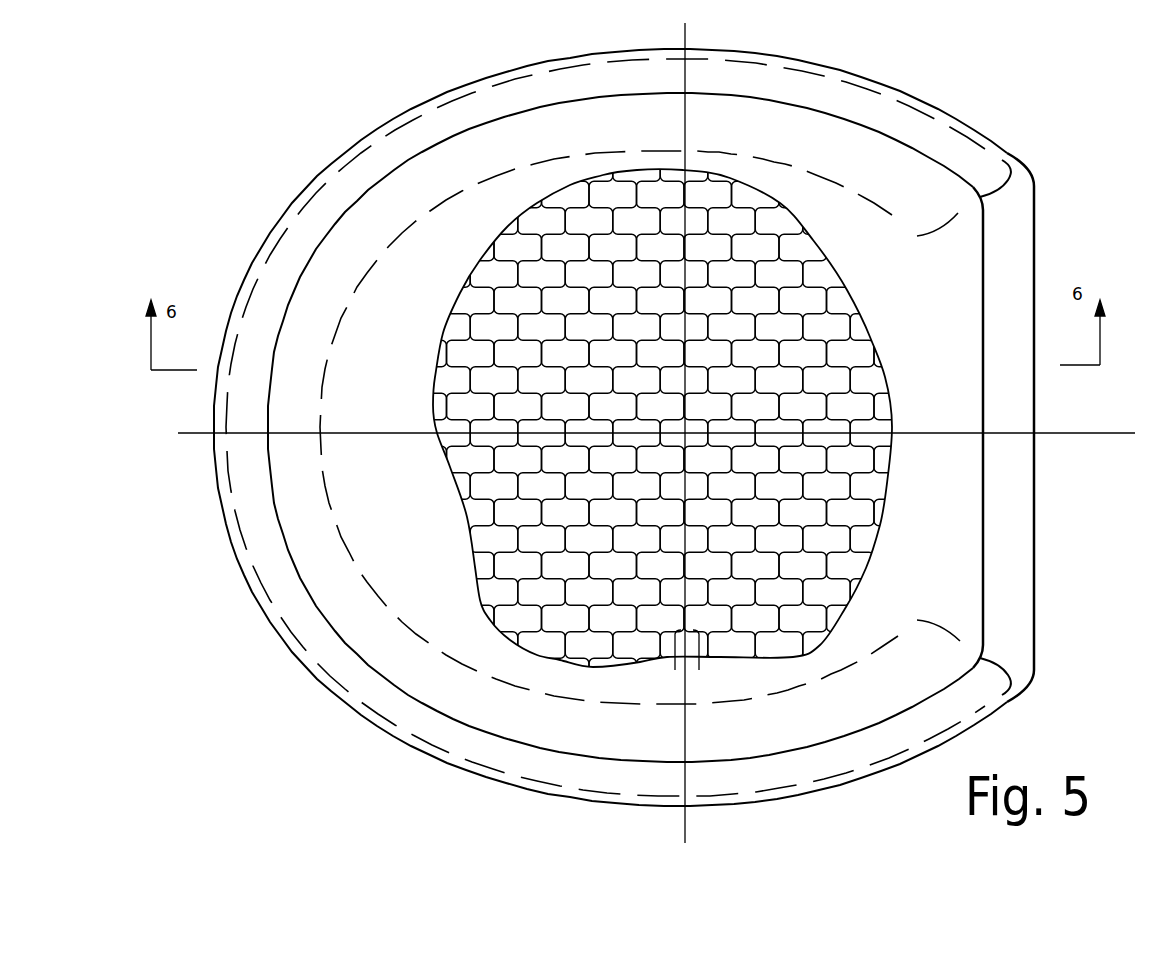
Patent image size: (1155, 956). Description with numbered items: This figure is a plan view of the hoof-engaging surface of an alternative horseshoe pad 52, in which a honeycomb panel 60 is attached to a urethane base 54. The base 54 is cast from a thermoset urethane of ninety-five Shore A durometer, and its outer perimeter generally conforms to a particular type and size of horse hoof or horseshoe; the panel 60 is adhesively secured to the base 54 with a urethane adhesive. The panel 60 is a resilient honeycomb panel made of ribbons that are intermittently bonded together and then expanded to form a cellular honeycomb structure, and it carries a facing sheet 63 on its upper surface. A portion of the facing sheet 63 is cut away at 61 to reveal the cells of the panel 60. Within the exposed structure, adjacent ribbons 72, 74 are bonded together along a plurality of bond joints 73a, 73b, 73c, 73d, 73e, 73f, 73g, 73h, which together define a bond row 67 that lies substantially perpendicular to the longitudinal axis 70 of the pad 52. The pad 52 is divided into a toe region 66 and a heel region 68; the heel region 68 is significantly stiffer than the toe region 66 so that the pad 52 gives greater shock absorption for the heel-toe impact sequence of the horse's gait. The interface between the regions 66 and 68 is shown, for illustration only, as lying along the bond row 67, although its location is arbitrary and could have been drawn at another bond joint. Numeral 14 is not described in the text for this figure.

The seat 14 is at (393, 754).
The horseshoe pad 52 is at (302, 683).
The urethane base 54 is at (280, 573).
The honeycomb panel 60 is at (612, 252).
The cut-away portion 61 is at (466, 517).
The facing sheet 63 is at (386, 372).
The toe region 66 is at (430, 270).
The bond row 67 is at (684, 36).
The heel region 68 is at (888, 245).
The longitudinal axis 70 is at (1058, 430).
The ribbon 72 is at (675, 670).
The ribbon 74 is at (699, 670).
The bond joint 73a is at (684, 618).
The bond joint 73b is at (684, 566).
The bond joint 73c is at (684, 512).
The bond joint 73d is at (684, 460).
The bond joint 73e is at (684, 406).
The bond joint 73f is at (684, 354).
The bond joint 73g is at (684, 300).
The bond joint 73h is at (684, 248).